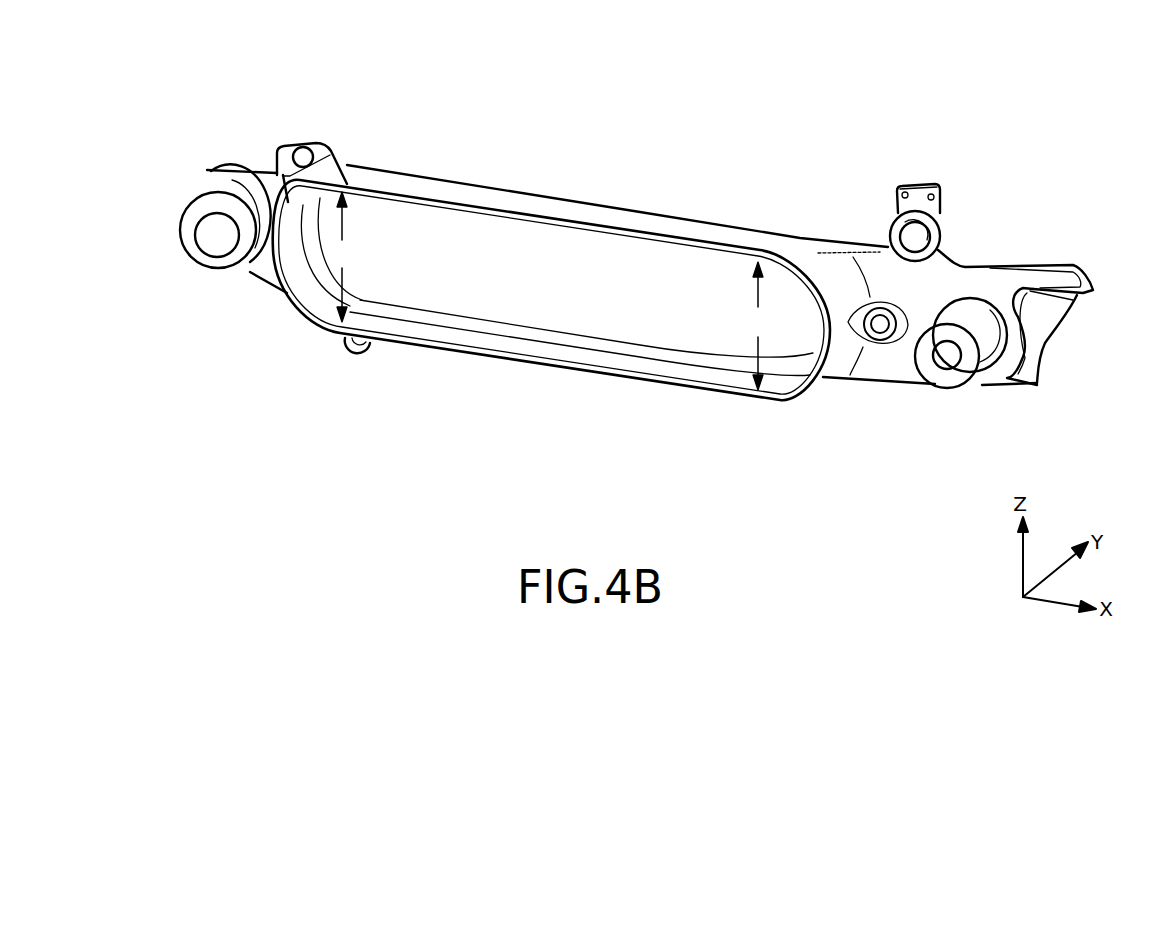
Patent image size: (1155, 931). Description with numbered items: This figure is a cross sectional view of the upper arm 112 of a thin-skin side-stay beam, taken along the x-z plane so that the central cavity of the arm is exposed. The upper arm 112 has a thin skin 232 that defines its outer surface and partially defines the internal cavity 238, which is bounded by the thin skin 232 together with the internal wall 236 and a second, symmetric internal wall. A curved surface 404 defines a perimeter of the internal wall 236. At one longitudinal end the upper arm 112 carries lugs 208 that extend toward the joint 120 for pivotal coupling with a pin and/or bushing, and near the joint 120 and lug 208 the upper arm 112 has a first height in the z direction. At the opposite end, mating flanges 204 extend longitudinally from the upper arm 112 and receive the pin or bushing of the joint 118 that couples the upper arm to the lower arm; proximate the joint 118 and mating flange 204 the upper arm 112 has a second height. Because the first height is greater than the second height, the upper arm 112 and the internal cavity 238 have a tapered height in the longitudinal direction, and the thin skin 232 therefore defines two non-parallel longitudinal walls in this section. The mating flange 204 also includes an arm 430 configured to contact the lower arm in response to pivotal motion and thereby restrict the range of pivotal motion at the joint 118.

The upper arm 112 is at (636, 120).
The joint 118 is at (958, 370).
The joint 120 is at (213, 210).
The mating flanges 204 is at (953, 290).
The lugs 208 is at (262, 185).
The thin skin 232 is at (738, 237).
The internal wall 236 is at (467, 295).
The internal cavity 238 is at (712, 333).
The curved surface 404 is at (625, 348).
The arm 430 is at (1062, 278).